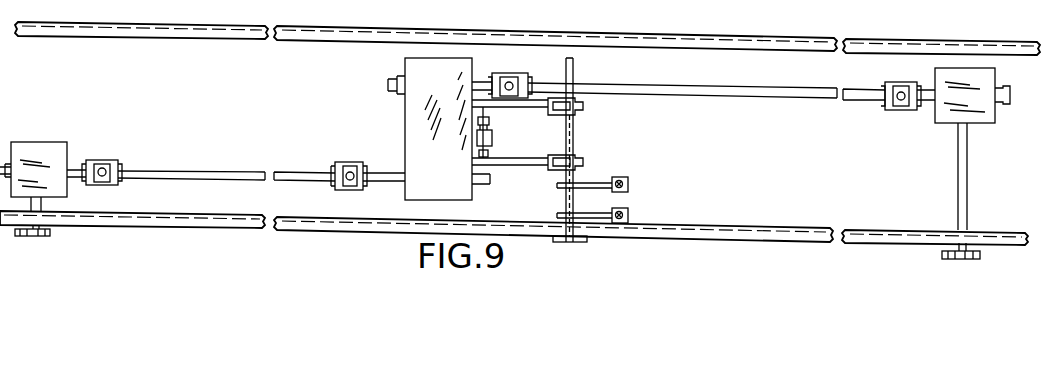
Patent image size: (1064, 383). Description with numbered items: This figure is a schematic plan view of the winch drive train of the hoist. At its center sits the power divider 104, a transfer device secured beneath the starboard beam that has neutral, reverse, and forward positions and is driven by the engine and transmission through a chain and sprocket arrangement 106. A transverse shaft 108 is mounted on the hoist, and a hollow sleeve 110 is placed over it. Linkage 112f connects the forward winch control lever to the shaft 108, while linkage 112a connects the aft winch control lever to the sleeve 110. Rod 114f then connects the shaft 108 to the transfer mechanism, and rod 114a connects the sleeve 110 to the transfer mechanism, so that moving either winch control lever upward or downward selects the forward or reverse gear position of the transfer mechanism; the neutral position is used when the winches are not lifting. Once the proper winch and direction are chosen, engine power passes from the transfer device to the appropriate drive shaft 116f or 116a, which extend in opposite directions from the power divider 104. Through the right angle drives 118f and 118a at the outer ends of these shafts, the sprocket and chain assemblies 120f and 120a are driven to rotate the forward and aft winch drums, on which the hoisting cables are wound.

The power divider 104 is at (406, 112).
The chain and sprocket arrangement 106 is at (487, 148).
The transverse shaft 108 is at (574, 77).
The hollow sleeve 110 is at (575, 139).
The linkage 112a is at (621, 183).
The linkage 112f is at (621, 216).
The rod 114a is at (527, 166).
The rod 114f is at (541, 110).
The drive shaft 116a is at (171, 165).
The drive shaft 116f is at (736, 96).
The right angle drive 118a is at (44, 150).
The right angle drive 118f is at (981, 117).
The sprocket and chain assembly 120a is at (52, 236).
The sprocket and chain assembly 120f is at (991, 257).